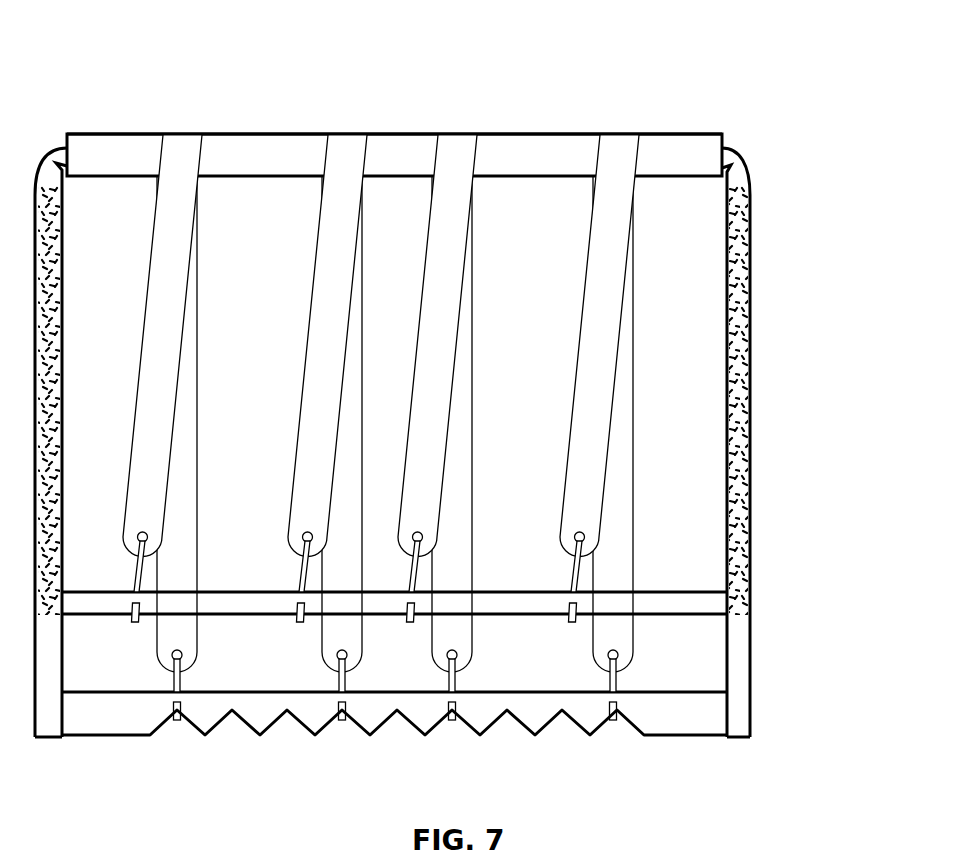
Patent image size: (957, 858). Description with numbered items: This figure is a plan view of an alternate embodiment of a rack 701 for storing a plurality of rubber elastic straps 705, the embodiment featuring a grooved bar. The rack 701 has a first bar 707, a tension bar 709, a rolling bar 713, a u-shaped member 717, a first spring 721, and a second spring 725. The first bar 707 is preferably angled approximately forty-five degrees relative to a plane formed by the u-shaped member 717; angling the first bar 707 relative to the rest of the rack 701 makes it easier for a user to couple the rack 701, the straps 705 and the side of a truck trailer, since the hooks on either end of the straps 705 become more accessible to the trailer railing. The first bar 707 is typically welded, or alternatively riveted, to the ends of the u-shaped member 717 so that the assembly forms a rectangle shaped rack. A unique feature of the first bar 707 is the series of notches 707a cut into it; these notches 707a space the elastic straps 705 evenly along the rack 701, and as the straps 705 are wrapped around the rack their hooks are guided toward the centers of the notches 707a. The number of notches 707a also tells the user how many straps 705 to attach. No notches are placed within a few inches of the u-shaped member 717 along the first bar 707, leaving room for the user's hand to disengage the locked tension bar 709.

The rack 701 is at (712, 82).
The rolling bar 713 is at (90, 134).
The u-shaped member 717 is at (752, 172).
The second spring 725 is at (752, 265).
The first spring 721 is at (60, 328).
The elastic straps 705 is at (361, 206).
The tension bar 709 is at (482, 592).
The first bar 707 is at (495, 692).
The notches 707a is at (511, 752).